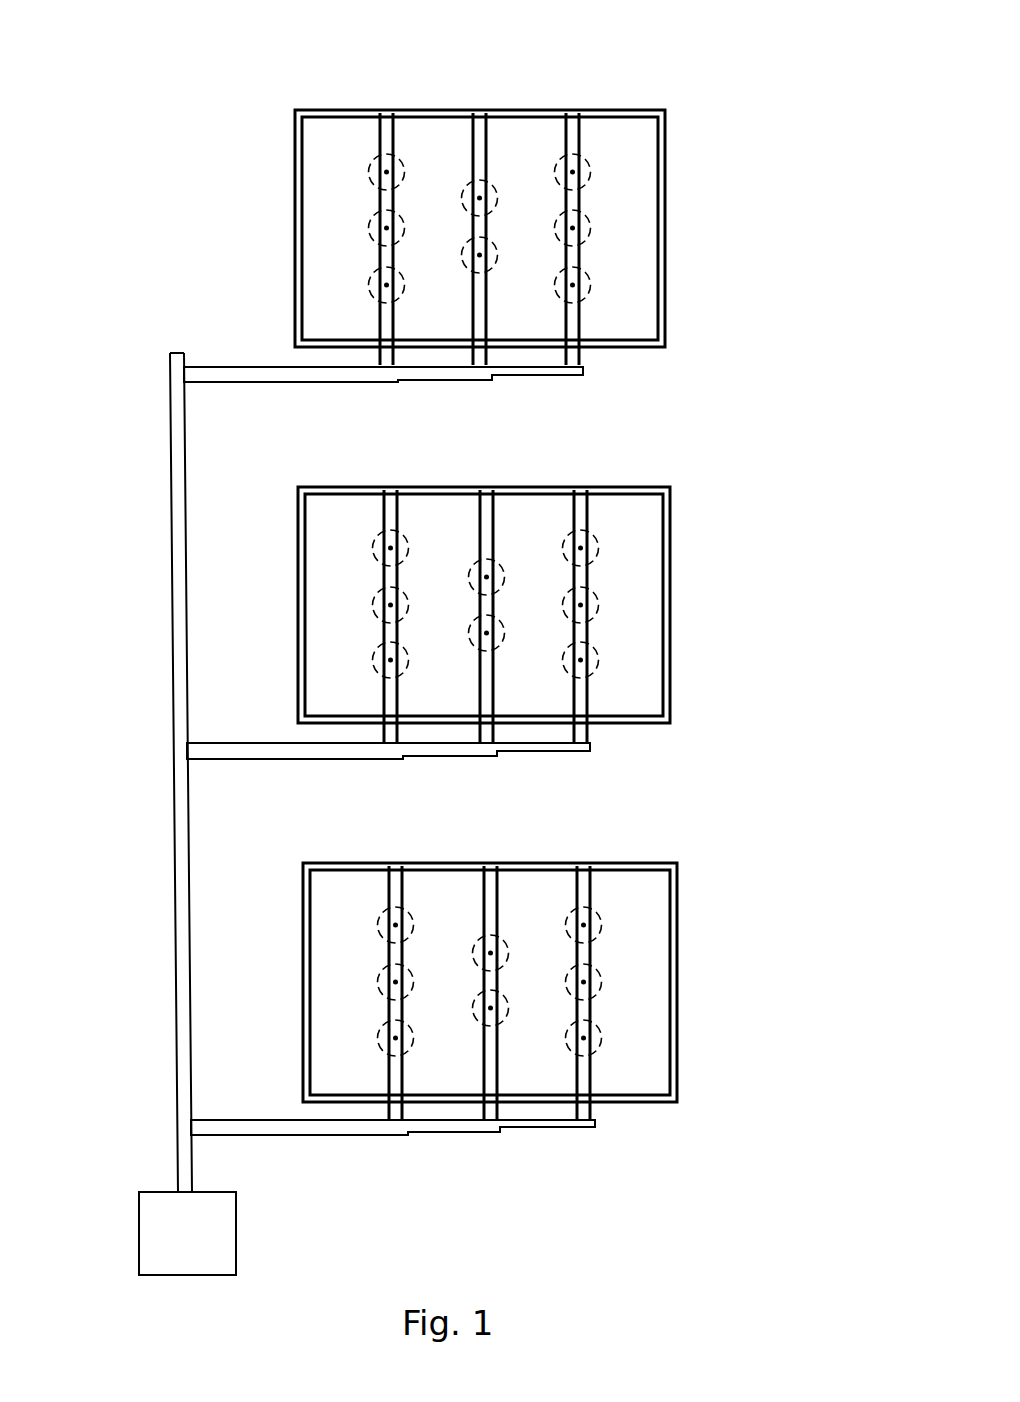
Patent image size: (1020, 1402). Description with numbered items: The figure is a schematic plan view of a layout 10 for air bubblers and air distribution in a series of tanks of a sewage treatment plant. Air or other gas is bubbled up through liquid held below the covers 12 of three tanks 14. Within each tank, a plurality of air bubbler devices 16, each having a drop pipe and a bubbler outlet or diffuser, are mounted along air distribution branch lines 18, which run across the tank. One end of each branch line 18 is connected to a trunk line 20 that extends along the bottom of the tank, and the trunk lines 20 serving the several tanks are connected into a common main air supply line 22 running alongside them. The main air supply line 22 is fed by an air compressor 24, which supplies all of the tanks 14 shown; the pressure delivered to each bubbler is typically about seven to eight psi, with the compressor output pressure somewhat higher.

The schematic layout 10 is at (690, 97).
The cover 12 is at (641, 237).
The tank 14 is at (667, 285).
The air bubbler device 16 is at (391, 165).
The air distribution branch line 18 is at (382, 258).
The trunk line 20 is at (462, 382).
The main air supply line 22 is at (183, 1027).
The air compressor 24 is at (236, 1272).